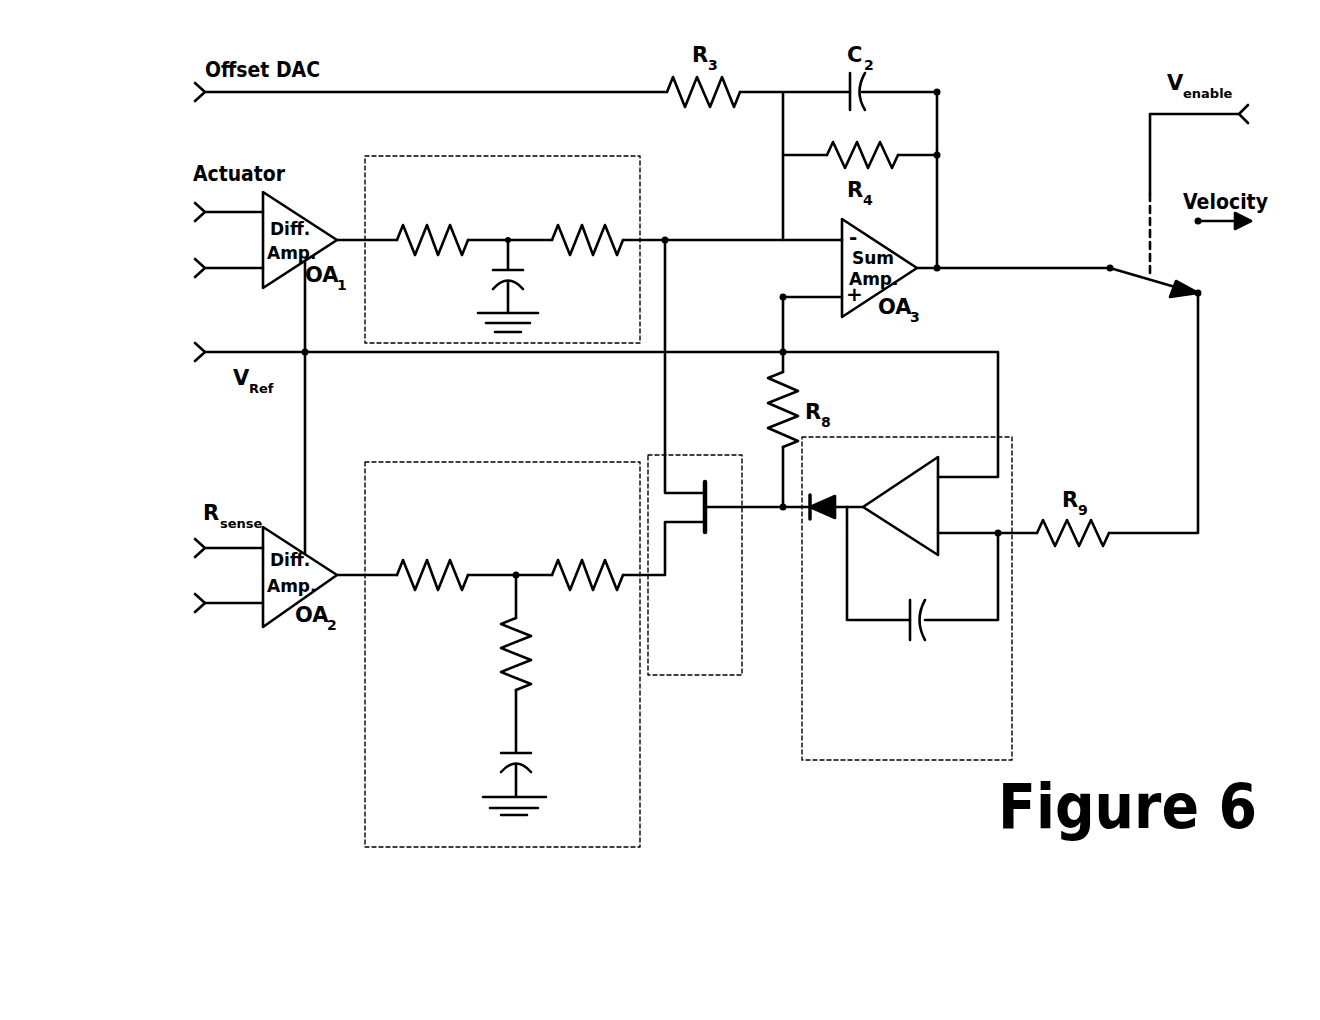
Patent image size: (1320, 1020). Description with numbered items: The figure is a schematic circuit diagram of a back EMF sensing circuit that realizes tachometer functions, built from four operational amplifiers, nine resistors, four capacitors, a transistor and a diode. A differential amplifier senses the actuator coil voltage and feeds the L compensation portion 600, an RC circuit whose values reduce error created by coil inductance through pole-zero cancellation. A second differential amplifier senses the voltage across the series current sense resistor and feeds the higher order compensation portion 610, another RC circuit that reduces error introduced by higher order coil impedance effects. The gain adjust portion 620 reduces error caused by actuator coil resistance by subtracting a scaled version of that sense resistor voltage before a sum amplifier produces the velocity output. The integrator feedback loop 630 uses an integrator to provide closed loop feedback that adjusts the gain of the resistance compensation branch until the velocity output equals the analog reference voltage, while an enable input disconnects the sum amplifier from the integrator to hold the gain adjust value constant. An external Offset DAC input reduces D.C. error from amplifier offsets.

The L compensation portion 600 is at (502, 249).
The higher order compensation portion 610 is at (502, 654).
The gain adjust portion 620 is at (715, 565).
The integrator feedback loop 630 is at (910, 598).